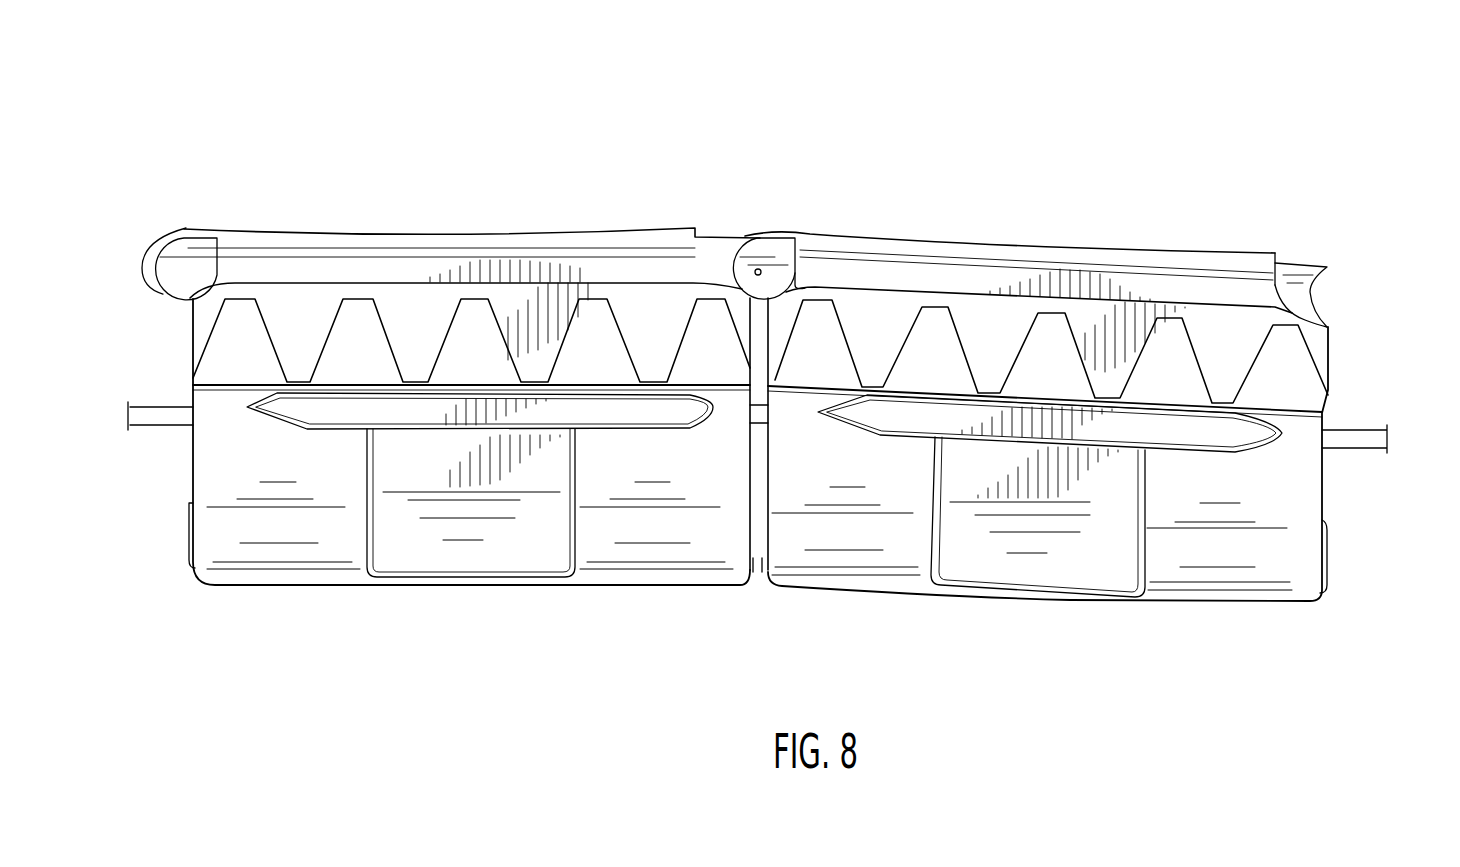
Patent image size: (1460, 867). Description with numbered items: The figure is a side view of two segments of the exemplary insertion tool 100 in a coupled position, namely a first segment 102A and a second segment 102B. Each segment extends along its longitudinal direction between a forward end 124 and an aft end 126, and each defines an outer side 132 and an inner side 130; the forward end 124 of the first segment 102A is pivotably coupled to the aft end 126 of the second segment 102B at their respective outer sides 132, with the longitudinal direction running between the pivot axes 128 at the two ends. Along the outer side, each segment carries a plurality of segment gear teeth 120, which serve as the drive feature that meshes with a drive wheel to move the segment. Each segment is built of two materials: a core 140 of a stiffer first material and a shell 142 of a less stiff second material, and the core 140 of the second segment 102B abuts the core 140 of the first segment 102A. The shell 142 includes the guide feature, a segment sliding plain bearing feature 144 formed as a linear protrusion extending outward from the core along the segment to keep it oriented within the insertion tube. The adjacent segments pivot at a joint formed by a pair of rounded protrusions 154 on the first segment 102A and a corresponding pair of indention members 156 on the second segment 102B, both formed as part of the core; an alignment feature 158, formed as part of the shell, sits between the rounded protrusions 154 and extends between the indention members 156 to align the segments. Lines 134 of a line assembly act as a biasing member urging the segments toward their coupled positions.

The insertion tool 100 is at (1338, 162).
The first segment 102A is at (428, 207).
The second segment 102B is at (1068, 210).
The segment gear teeth 120 is at (355, 322).
The forward end 124 is at (768, 458).
The aft end 126 is at (150, 448).
The pivot axis 128 is at (761, 270).
The inner side 130 is at (478, 622).
The outer side 132 is at (618, 208).
The lines 134 is at (180, 408).
The core 140 is at (762, 574).
The shell 142 is at (232, 547).
The segment sliding plain bearing feature 144 is at (373, 408).
The rounded protrusions 154 is at (173, 277).
The indention members 156 is at (725, 263).
The alignment feature 158 is at (151, 257).